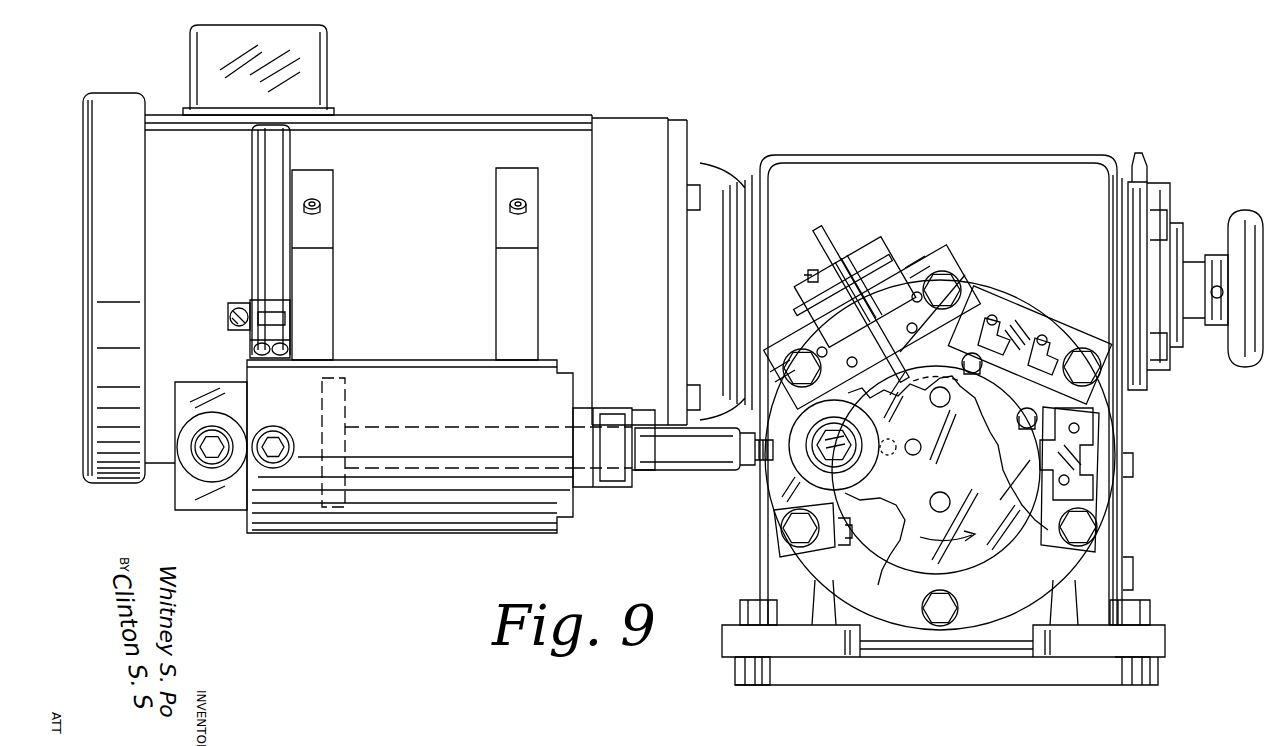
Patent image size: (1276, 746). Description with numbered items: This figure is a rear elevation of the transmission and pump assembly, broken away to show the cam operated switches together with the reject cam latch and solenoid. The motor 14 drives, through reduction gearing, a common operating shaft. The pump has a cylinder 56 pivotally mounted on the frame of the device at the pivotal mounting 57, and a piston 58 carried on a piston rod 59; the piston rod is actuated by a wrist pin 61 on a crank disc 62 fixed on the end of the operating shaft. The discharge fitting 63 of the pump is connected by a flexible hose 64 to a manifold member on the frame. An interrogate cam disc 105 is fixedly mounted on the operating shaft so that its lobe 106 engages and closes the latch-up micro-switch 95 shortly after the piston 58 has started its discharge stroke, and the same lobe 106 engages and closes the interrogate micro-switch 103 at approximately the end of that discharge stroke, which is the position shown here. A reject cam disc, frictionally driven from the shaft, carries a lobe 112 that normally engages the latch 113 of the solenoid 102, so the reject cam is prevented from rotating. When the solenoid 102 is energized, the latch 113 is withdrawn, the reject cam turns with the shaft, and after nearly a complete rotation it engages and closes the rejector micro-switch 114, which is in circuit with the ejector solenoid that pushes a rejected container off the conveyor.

The motor 14 is at (466, 128).
The cylinder 56 is at (395, 531).
The pivotal mounting 57 is at (215, 470).
The piston 58 is at (338, 510).
The piston rod 59 is at (700, 472).
The wrist pin 61 is at (828, 453).
The crank disc 62 is at (970, 552).
The discharge fitting 63 is at (250, 351).
The flexible hose 64 is at (258, 263).
The latch-up micro-switch 95 is at (786, 552).
The solenoid 102 is at (885, 258).
The interrogate micro-switch 103 is at (1100, 447).
The interrogate cam disc 105 is at (1005, 458).
The lobe 106 is at (992, 417).
The lobe 112 is at (938, 322).
The latch 113 is at (925, 340).
The rejector micro-switch 114 is at (1020, 313).